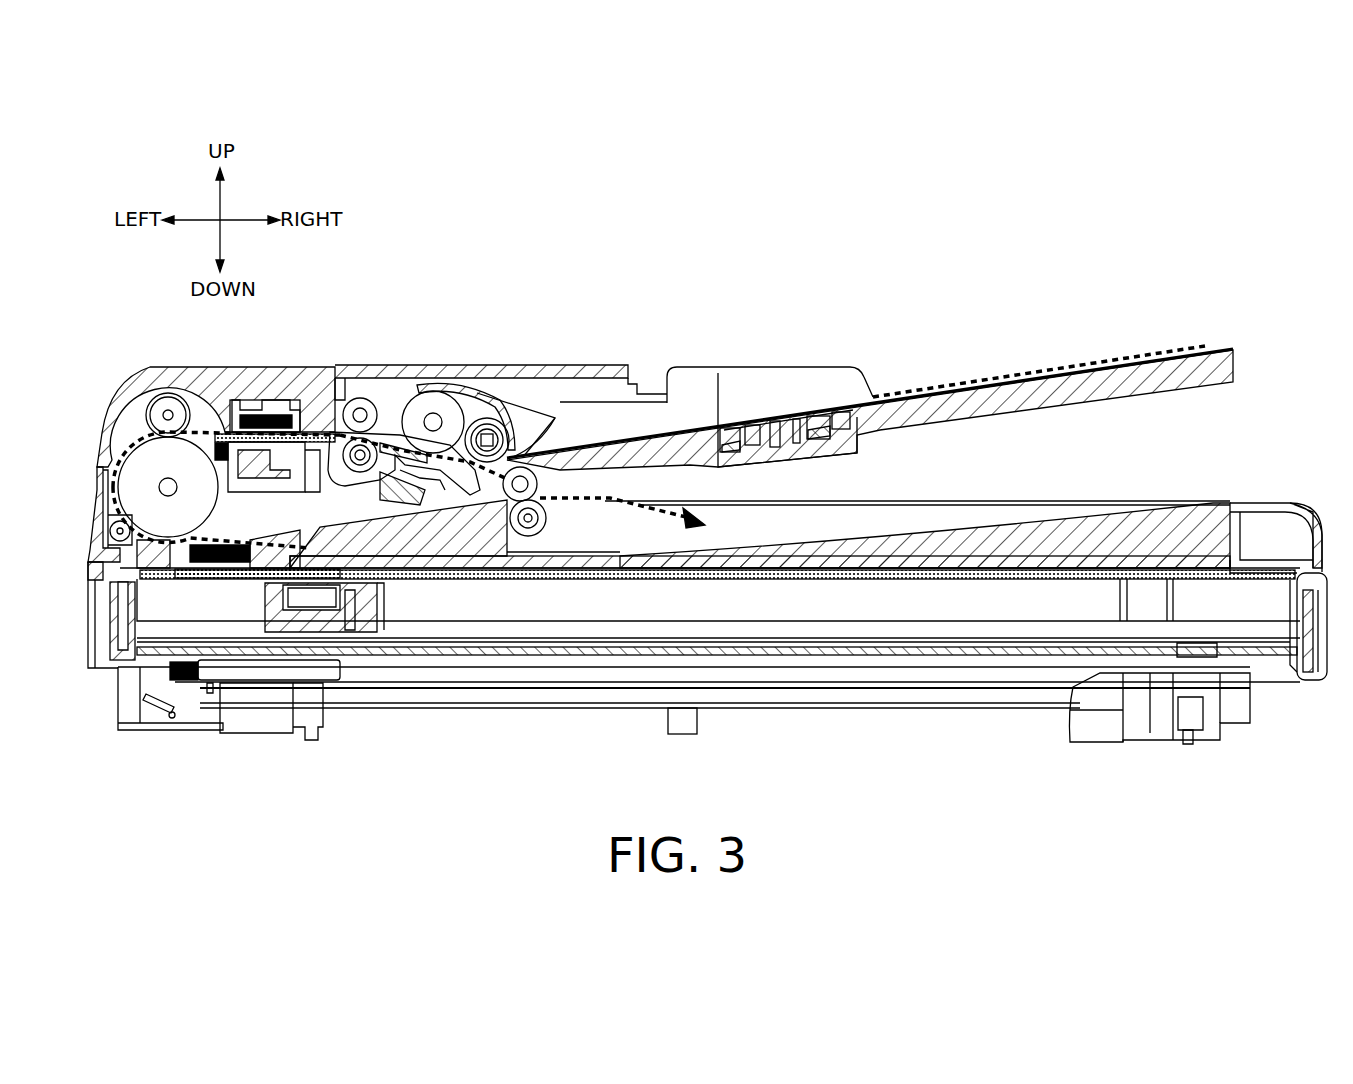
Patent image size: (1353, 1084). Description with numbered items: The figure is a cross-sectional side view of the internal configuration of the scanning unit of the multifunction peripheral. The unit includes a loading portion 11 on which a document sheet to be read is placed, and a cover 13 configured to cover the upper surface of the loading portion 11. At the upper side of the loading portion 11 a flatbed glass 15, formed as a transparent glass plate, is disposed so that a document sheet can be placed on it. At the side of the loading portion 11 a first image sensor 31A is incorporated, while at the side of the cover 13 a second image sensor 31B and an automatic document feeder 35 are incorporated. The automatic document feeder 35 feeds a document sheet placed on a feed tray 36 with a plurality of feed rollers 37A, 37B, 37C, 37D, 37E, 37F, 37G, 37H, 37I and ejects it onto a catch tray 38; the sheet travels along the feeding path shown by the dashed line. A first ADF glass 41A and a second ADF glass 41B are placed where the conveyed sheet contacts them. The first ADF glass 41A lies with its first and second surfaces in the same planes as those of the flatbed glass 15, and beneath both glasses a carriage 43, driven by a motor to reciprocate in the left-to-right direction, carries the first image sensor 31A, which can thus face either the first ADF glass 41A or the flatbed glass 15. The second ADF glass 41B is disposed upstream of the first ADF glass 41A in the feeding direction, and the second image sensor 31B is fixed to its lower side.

The loading portion 11 is at (1327, 676).
The cover 13 is at (1312, 530).
The flatbed (FB) glass 15 is at (625, 592).
The first image sensor 31A is at (352, 640).
The second image sensor 31B is at (272, 468).
The automatic document feeder (ADF) 35 is at (812, 362).
The feed tray 36 is at (718, 385).
The feed roller 37A is at (487, 416).
The feed roller 37B is at (403, 393).
The feed roller 37C is at (358, 396).
The feed roller 37D is at (352, 470).
The feed roller 37E is at (168, 400).
The feed roller 37F is at (130, 462).
The feed roller 37G is at (90, 550).
The feed roller 37H is at (555, 518).
The feed roller 37I is at (560, 483).
The catch tray 38 is at (905, 540).
The first ADF glass 41A is at (232, 585).
The second ADF glass 41B is at (222, 430).
The carriage 43 is at (380, 610).